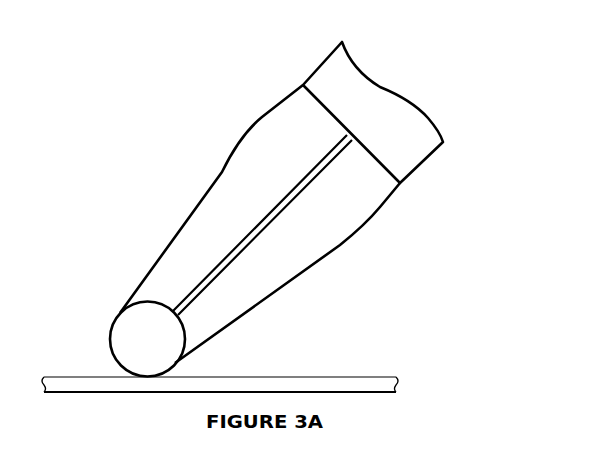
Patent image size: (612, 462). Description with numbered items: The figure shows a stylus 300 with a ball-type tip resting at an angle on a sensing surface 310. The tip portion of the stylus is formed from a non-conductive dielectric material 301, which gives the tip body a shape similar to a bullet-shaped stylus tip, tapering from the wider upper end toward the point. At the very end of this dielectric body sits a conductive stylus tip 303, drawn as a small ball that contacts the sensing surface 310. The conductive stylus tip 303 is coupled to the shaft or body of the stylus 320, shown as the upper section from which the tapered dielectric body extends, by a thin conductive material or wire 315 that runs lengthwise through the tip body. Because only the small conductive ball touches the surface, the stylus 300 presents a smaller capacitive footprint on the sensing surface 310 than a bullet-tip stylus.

The stylus 300 is at (70, 105).
The non-conductive dielectric material 301 is at (227, 184).
The conductive stylus tip 303 is at (116, 338).
The sensing surface 310 is at (398, 380).
The thin conductive material or wire 315 is at (280, 225).
The shaft or body of the stylus 320 is at (427, 140).